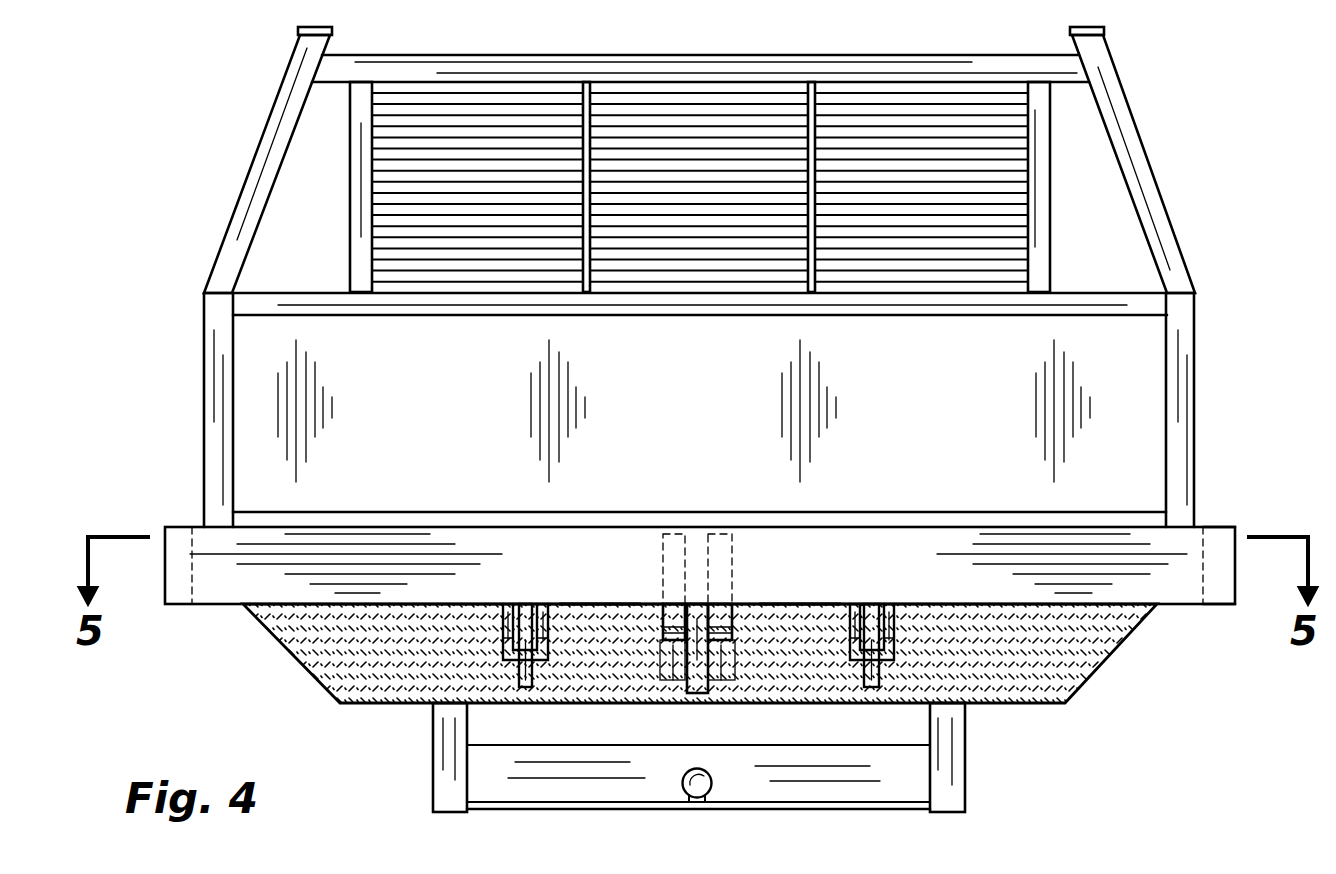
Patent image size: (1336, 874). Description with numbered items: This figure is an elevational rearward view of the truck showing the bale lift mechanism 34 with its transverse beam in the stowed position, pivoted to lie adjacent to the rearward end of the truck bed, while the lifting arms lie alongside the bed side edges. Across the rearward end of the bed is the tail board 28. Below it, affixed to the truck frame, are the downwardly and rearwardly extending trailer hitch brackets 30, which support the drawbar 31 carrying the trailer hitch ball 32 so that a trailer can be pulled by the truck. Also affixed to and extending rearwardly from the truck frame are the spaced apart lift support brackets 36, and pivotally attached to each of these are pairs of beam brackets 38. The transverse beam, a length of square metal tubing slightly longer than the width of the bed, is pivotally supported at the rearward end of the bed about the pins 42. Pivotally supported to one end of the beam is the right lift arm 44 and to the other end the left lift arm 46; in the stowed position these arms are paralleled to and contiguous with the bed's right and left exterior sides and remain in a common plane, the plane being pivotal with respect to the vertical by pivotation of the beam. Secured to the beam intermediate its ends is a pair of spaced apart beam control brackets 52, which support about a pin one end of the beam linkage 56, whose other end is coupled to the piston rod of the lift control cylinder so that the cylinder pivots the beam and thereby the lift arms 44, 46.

The tail board 28 is at (1045, 673).
The trailer hitch brackets 30 is at (947, 783).
The drawbar 31 is at (838, 775).
The trailer hitch ball 32 is at (712, 781).
The bale lift mechanism 34 is at (237, 658).
The lift support brackets 36 is at (533, 688).
The beam brackets 38 is at (545, 604).
The pins 42 is at (578, 610).
The right lift arm 44 is at (1218, 537).
The left lift arm 46 is at (180, 540).
The beam control brackets 52 is at (670, 680).
The beam linkage 56 is at (693, 617).